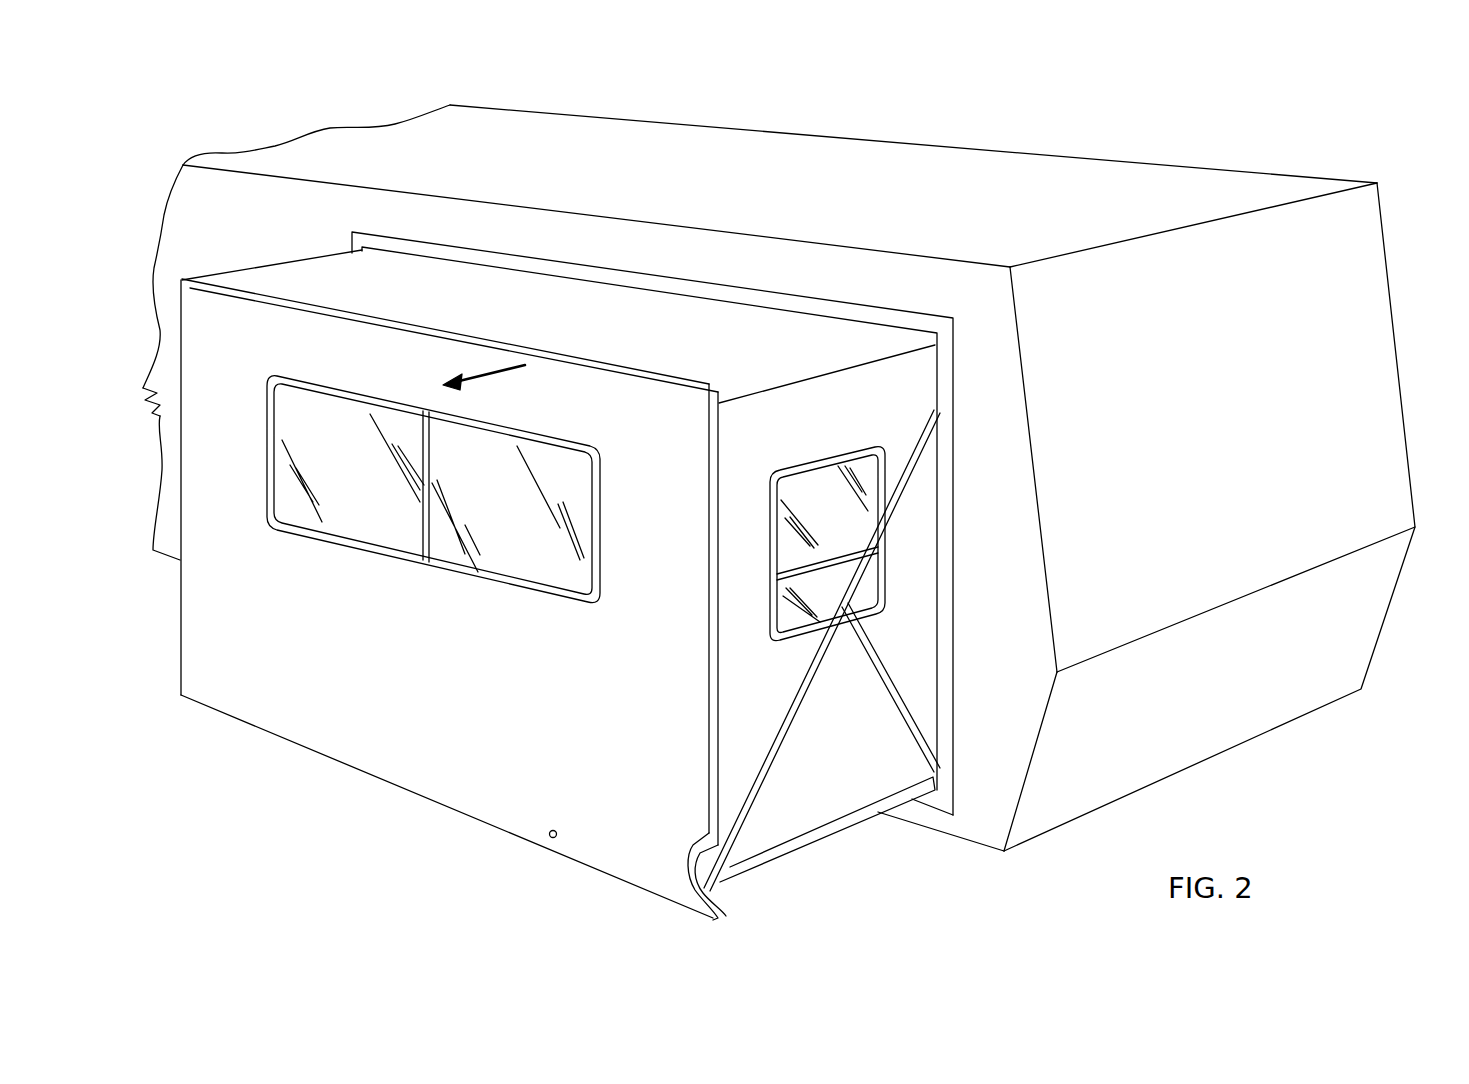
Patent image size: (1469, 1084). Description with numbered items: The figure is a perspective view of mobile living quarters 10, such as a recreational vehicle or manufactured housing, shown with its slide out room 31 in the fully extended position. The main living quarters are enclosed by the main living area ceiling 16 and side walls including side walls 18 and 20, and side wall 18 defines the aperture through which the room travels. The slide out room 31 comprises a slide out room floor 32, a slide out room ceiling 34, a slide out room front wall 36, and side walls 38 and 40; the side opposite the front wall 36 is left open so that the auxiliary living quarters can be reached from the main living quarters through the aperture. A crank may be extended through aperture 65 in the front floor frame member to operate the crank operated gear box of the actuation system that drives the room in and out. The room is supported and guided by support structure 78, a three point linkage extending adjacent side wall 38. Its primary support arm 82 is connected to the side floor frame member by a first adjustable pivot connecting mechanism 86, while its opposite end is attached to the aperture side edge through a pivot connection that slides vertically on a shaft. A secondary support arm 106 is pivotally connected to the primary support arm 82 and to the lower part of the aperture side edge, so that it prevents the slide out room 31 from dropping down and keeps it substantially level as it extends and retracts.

The mobile living quarters 10 is at (1389, 182).
The main living area ceiling 16 is at (1017, 220).
The main living area side wall 18 is at (979, 517).
The main living area side wall 20 is at (1226, 390).
The slide out room 31 is at (618, 882).
The slide out room floor 32 is at (818, 841).
The slide out room ceiling 34 is at (689, 351).
The slide out room front wall 36 is at (581, 678).
The slide out room side wall 38 is at (803, 433).
The slide out room side wall 40 is at (283, 268).
The aperture 65 is at (552, 840).
The support structure 78 is at (787, 713).
The primary support arm 82 is at (785, 742).
The first adjustable pivot connecting mechanism 86 is at (718, 893).
The secondary support arm 106 is at (890, 685).